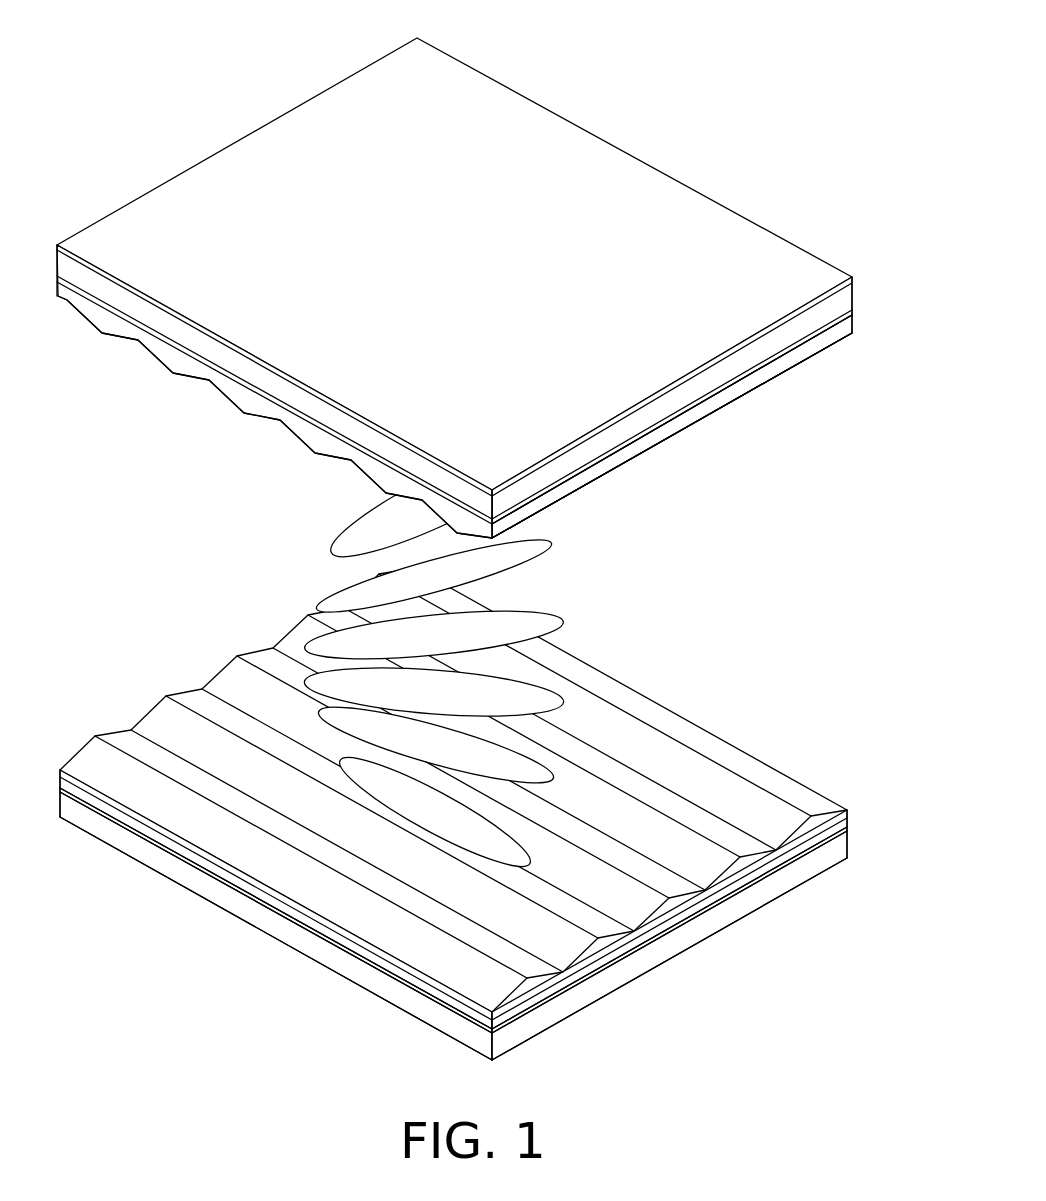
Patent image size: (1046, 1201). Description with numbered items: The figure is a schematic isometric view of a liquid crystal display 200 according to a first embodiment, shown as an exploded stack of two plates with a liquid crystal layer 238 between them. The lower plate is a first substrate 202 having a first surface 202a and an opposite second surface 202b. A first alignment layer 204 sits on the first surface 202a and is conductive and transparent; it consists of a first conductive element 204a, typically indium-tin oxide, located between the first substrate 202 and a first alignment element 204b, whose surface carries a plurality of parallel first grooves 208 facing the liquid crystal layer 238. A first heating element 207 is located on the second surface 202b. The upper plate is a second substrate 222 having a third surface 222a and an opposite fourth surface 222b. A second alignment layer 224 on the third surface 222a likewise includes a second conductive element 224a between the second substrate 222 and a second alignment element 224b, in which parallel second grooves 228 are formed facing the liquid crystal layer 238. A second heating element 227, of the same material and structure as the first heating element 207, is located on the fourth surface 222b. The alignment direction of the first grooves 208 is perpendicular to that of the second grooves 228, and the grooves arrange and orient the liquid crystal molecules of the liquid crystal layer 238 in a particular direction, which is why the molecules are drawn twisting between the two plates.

The liquid crystal display 200 is at (610, 30).
The first substrate 202 is at (628, 965).
The first surface 202a is at (833, 826).
The second surface 202b is at (693, 950).
The first alignment layer 204 is at (870, 910).
The first conductive element 204a is at (702, 913).
The first alignment element 204b is at (737, 873).
The first heating element 207 is at (580, 1012).
The first grooves 208 is at (235, 678).
The second substrate 222 is at (762, 360).
The third surface 222a is at (718, 397).
The fourth surface 222b is at (823, 296).
The second alignment layer 224 is at (763, 502).
The second conductive element 224a is at (672, 423).
The second alignment element 224b is at (638, 452).
The second heating element 227 is at (797, 323).
The second grooves 228 is at (207, 380).
The liquid crystal layer 238 is at (543, 630).